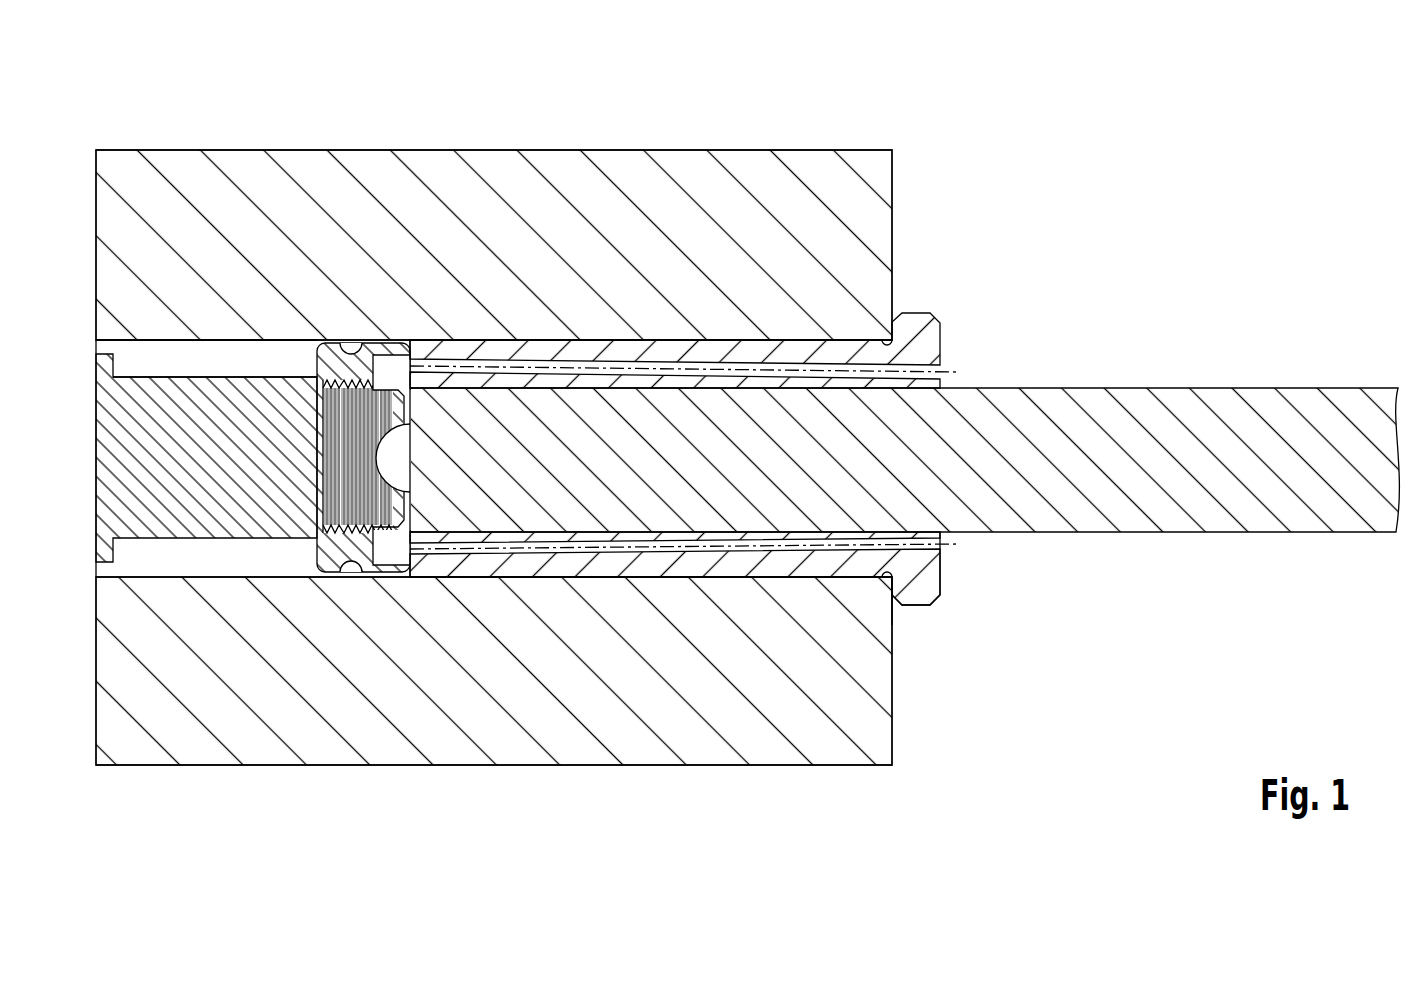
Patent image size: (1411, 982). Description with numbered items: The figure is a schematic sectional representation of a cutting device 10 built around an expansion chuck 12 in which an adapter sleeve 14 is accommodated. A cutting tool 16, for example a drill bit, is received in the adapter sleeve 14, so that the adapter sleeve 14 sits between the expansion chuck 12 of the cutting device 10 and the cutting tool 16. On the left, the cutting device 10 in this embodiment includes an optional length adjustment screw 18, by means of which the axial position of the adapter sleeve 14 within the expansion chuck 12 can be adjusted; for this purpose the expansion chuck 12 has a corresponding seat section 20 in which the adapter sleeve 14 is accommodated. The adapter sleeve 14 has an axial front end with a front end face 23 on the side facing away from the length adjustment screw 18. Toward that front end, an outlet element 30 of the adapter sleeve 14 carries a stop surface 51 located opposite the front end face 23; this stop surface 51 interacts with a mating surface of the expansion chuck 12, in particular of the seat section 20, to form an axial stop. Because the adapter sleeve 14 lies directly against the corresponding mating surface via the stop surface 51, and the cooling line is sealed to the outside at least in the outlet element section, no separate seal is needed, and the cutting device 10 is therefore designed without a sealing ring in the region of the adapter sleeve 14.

The cutting device 10 is at (997, 111).
The expansion chuck 12 is at (687, 172).
The adapter sleeve 14 is at (920, 346).
The cutting tool 16 is at (1133, 400).
The length adjustment screw 18 is at (115, 458).
The seat section 20 is at (233, 350).
The front end face 23 is at (950, 570).
The outlet element 30 is at (920, 346).
The stop surface 51 is at (880, 600).